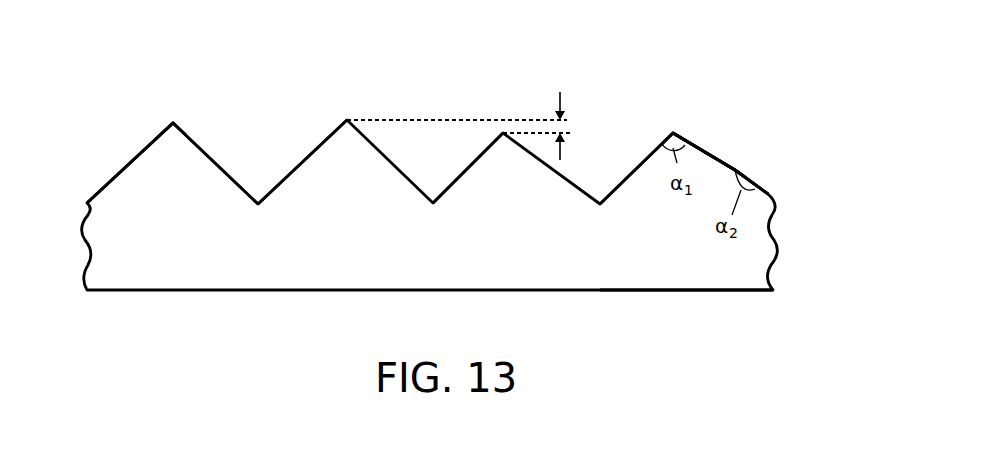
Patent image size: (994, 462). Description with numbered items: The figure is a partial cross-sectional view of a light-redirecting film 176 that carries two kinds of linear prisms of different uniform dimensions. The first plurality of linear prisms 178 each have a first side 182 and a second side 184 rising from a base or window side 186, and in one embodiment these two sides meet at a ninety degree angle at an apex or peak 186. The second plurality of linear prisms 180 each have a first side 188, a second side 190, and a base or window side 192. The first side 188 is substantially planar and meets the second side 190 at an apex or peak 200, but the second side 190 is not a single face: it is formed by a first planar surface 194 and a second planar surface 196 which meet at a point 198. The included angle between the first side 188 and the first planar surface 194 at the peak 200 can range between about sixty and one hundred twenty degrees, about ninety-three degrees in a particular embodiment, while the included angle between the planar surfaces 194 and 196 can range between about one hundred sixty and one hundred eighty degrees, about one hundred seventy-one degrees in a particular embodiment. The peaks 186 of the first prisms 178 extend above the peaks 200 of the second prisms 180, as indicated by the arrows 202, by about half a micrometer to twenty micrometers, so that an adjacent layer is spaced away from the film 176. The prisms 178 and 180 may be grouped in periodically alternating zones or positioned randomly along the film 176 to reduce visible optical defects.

The light-redirecting film 176 is at (371, 100).
The first plurality of linear prisms 178 is at (145, 143).
The second plurality of linear prisms 180 is at (468, 163).
The first side 182 is at (108, 180).
The second side 184 is at (203, 148).
The base or window side / apex or peak 186 is at (173, 122).
The first side 188 is at (648, 157).
The second side 190 is at (760, 158).
The base or window side 192 is at (683, 230).
The first planar surface 194 is at (690, 142).
The second planar surface 196 is at (768, 193).
The point 198 is at (750, 173).
The apex or peak 200 is at (672, 132).
The arrows 202 is at (560, 92).